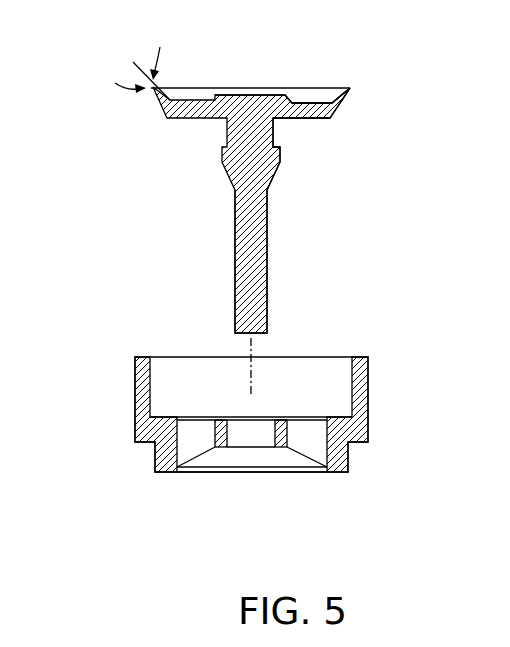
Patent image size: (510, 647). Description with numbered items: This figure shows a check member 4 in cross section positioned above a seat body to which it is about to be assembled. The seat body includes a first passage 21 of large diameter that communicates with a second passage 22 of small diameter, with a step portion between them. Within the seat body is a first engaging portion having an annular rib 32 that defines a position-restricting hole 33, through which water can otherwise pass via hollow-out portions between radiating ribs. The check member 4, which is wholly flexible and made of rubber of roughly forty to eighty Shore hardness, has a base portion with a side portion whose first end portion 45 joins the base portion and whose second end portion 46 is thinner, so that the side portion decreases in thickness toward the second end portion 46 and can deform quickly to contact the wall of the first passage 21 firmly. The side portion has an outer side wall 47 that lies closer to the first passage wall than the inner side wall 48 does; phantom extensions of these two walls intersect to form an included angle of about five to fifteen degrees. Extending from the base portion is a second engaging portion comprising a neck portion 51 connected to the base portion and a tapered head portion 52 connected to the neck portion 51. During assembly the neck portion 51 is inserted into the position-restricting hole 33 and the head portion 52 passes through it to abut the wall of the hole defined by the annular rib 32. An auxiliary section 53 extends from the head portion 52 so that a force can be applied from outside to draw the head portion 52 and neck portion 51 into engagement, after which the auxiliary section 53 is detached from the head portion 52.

The check member 4 is at (192, 219).
The first passage 21 is at (145, 385).
The second passage 22 is at (155, 460).
The annular rib 32 is at (287, 430).
The position-restricting hole 33 is at (248, 440).
The first end portion 45 is at (337, 130).
The second end portion 46 is at (364, 79).
The outer side wall 47 is at (342, 103).
The inner side wall 48 is at (335, 98).
The neck portion 51 is at (277, 140).
The head portion 52 is at (277, 175).
The auxiliary section 53 is at (263, 275).